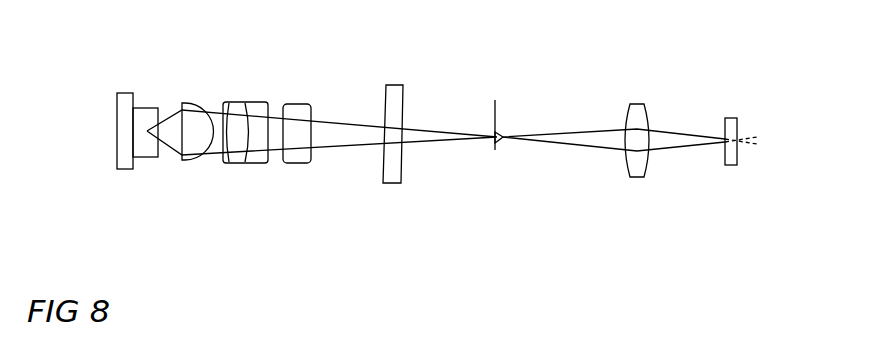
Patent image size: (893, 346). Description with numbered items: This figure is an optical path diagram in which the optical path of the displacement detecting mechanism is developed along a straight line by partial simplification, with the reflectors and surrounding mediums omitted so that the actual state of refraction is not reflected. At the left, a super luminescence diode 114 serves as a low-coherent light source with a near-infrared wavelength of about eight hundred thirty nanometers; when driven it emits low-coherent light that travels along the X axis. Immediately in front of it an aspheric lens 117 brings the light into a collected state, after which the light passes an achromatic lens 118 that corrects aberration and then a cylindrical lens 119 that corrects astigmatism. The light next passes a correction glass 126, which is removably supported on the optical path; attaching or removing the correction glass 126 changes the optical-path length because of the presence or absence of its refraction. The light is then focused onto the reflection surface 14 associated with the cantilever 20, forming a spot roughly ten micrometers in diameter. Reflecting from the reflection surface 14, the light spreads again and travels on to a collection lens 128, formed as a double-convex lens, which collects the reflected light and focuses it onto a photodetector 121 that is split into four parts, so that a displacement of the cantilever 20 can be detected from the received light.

The super luminescence diode 114 is at (124, 169).
The aspheric lens 117 is at (183, 161).
The achromatic lens 118 is at (250, 163).
The cylindrical lens 119 is at (295, 163).
The correction glass 126 is at (395, 177).
The cantilever 20 is at (495, 118).
The reflection surface 14 is at (495, 150).
The collection lens 128 is at (635, 171).
The photodetector 121 is at (728, 166).